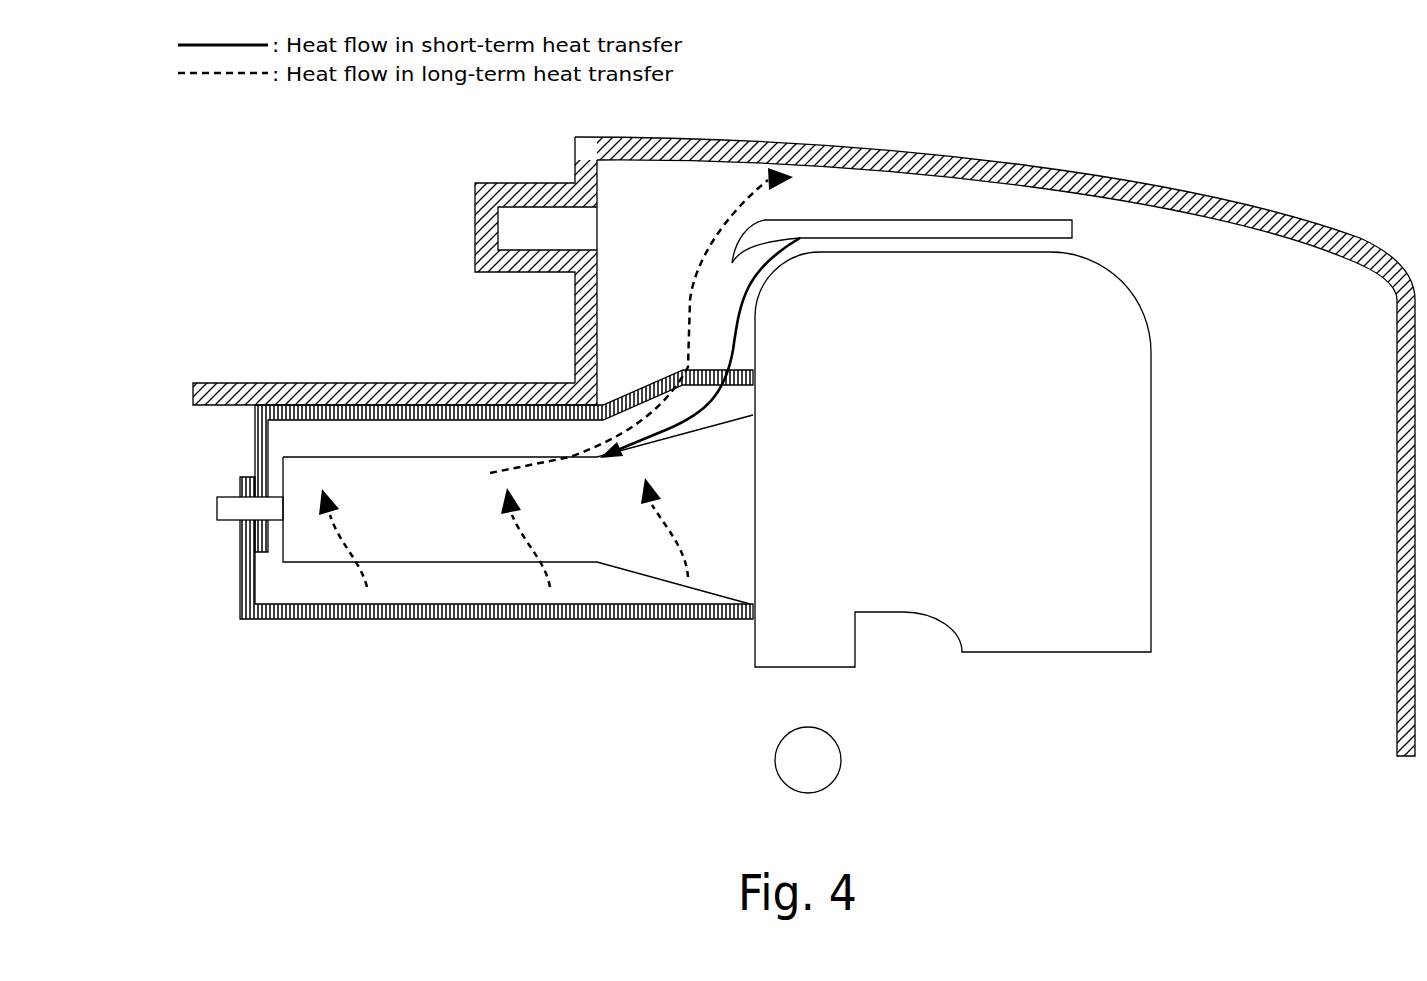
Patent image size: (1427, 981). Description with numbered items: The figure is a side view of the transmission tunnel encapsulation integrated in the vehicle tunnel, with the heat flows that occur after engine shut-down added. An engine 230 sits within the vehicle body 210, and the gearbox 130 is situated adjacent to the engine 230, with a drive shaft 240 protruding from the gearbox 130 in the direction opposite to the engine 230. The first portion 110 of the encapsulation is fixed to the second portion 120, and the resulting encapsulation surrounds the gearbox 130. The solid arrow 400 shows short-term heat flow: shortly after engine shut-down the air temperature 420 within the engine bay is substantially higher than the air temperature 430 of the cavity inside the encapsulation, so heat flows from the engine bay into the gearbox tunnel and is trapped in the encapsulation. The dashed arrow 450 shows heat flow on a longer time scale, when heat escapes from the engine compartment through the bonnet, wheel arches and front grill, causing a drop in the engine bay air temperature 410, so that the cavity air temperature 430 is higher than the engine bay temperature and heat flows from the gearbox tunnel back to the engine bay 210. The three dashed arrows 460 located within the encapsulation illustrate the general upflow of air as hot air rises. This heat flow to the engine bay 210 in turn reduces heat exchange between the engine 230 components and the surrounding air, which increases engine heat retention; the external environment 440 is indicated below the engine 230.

The first portion 110 is at (302, 413).
The second portion 120 is at (337, 612).
The gearbox 130 is at (297, 543).
The vehicle body 210 is at (658, 180).
The engine 230 is at (1115, 357).
The drive shaft 240 is at (227, 507).
The solid arrow 400 is at (742, 295).
The engine bay air temperature 410 is at (762, 170).
The air temperature within the engine bay 420 is at (915, 198).
The air temperature of the cavity 430 is at (410, 423).
The external environment 440 is at (842, 753).
The dashed arrow 450 is at (692, 298).
The three dashed arrows 460 is at (530, 537).